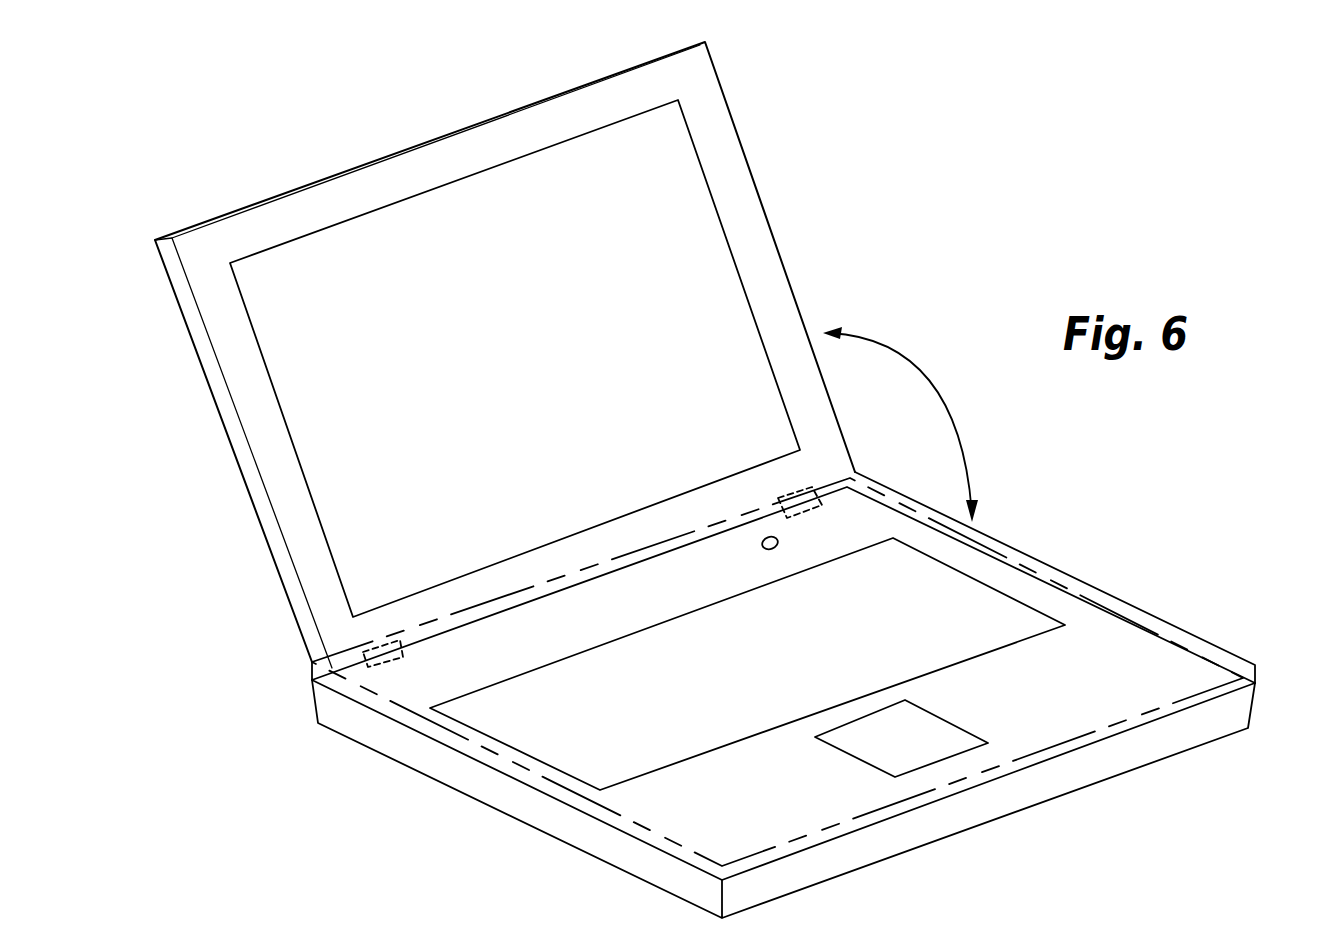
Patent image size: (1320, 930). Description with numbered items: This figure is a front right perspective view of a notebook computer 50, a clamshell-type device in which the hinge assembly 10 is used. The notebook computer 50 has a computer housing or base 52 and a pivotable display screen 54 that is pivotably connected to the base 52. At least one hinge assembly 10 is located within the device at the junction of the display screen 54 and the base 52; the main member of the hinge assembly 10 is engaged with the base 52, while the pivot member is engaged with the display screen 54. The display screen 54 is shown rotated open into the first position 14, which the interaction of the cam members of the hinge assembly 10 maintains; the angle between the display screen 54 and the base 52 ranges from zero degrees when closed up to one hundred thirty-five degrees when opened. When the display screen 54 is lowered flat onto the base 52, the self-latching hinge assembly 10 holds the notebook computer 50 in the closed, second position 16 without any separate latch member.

The first position 14 is at (722, 97).
The pivotable display screen 54 is at (747, 215).
The base 52 is at (1207, 725).
The second position 16 is at (1074, 590).
The hinge assembly 10 is at (812, 518).
The notebook computer 50 is at (858, 307).